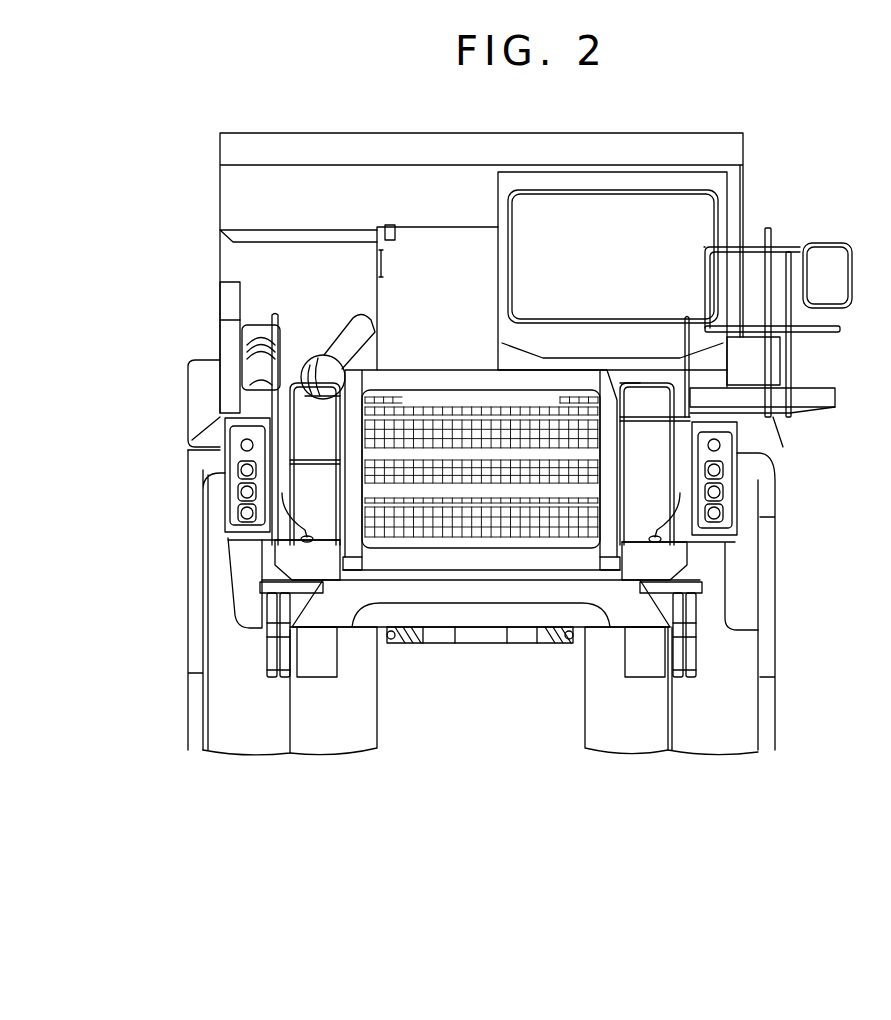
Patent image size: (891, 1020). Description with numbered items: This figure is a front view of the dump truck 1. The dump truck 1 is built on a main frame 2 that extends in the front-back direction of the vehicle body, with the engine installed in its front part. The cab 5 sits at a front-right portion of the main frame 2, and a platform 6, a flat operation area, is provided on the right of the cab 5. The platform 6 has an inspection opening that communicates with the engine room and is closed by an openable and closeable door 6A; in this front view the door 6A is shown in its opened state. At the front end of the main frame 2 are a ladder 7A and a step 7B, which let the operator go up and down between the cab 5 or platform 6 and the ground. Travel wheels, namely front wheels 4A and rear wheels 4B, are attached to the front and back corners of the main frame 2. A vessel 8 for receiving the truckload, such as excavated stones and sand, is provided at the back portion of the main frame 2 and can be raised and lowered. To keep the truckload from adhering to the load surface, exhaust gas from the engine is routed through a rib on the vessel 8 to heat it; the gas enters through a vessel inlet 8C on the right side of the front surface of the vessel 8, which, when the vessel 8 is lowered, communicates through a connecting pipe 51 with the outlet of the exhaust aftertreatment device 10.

The dump truck 1 is at (713, 111).
The main frame 2 is at (322, 660).
The front wheels 4A is at (254, 747).
The rear wheels 4B is at (200, 747).
The cab 5 is at (725, 210).
The platform 6 is at (427, 368).
The door 6A is at (452, 262).
The ladder 7A is at (290, 652).
The step 7B is at (300, 495).
The vessel 8 is at (473, 150).
The vessel inlet 8C is at (262, 340).
The exhaust aftertreatment device 10 is at (328, 360).
The connecting pipe 51 is at (262, 370).